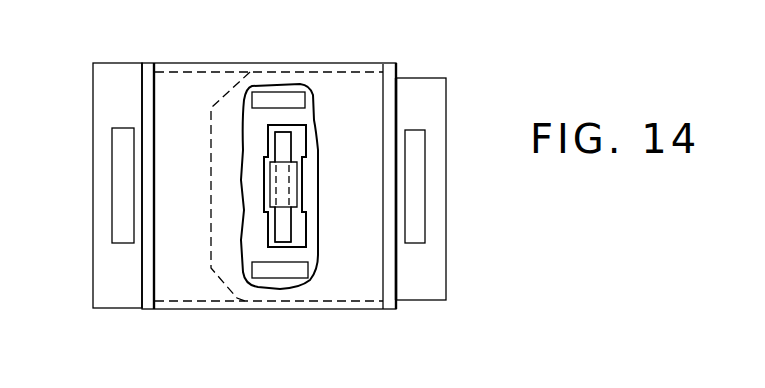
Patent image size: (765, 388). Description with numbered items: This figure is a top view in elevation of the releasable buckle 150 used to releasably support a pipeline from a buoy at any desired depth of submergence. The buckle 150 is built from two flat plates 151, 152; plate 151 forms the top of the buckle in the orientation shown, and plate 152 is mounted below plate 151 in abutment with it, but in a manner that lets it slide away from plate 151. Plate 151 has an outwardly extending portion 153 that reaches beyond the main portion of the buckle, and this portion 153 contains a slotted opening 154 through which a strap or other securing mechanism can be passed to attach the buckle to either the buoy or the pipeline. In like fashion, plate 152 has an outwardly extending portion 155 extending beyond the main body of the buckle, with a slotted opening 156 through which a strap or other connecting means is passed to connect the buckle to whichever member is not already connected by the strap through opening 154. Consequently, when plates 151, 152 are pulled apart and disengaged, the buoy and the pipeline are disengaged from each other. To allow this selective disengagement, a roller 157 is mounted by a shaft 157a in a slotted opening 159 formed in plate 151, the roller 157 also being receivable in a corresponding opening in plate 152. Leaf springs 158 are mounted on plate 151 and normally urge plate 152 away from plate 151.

The buckle 150 is at (413, 328).
The plate 151 is at (120, 88).
The plate 152 is at (403, 270).
The outwardly extending portion 153 is at (100, 226).
The slotted opening 154 is at (122, 173).
The outwardly extending portion 155 is at (433, 212).
The slotted opening 156 is at (417, 163).
The roller 157 is at (285, 188).
The shaft 157a is at (280, 145).
The leaf springs 158 is at (278, 93).
The slotted opening 159 is at (298, 227).